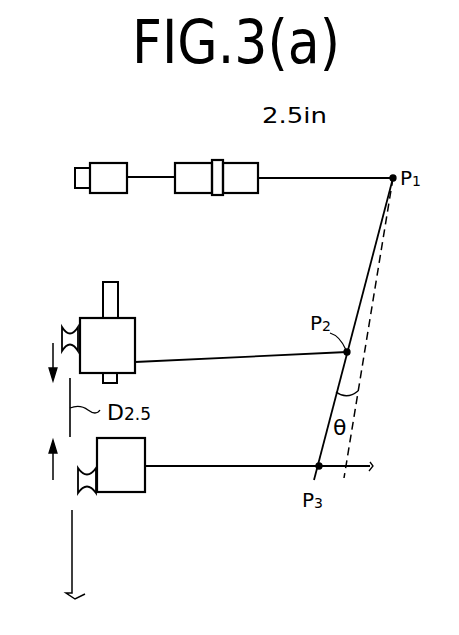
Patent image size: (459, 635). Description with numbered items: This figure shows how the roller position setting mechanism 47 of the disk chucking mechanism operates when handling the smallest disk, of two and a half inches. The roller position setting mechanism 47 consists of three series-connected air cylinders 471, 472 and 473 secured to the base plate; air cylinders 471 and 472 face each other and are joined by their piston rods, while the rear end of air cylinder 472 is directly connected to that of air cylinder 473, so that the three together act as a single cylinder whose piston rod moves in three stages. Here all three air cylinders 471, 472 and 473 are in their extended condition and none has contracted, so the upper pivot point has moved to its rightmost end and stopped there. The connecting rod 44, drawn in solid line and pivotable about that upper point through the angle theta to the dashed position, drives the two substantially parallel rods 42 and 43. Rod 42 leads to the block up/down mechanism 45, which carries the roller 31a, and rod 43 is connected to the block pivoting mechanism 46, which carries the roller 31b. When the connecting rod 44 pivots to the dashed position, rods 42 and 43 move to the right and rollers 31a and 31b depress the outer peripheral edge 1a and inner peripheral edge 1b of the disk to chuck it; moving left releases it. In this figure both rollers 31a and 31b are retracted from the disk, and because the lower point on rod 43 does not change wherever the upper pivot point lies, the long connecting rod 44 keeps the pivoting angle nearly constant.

The roller position setting mechanism 47 is at (177, 128).
The air cylinder 471 is at (105, 170).
The air cylinder 472 is at (192, 173).
The air cylinder 473 is at (245, 172).
The connecting rod 44 is at (369, 266).
The block up/down mechanism 45 is at (88, 327).
The roller 31a is at (62, 328).
The rod 42 is at (200, 355).
The rod 43 is at (265, 464).
The outer peripheral edge 1a is at (70, 378).
The inner peripheral edge 1b is at (70, 437).
The roller 31b is at (78, 483).
The block pivoting mechanism 46 is at (135, 493).